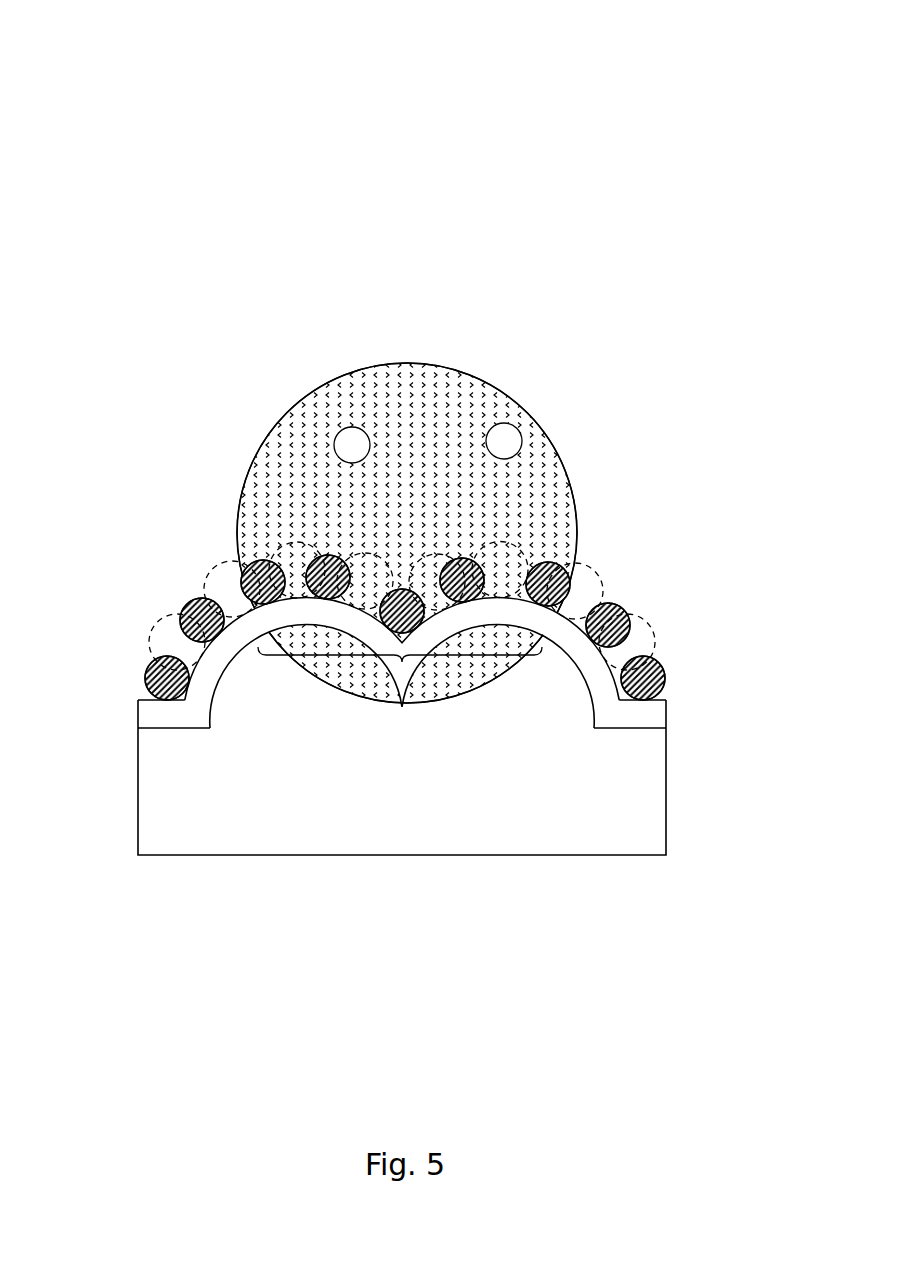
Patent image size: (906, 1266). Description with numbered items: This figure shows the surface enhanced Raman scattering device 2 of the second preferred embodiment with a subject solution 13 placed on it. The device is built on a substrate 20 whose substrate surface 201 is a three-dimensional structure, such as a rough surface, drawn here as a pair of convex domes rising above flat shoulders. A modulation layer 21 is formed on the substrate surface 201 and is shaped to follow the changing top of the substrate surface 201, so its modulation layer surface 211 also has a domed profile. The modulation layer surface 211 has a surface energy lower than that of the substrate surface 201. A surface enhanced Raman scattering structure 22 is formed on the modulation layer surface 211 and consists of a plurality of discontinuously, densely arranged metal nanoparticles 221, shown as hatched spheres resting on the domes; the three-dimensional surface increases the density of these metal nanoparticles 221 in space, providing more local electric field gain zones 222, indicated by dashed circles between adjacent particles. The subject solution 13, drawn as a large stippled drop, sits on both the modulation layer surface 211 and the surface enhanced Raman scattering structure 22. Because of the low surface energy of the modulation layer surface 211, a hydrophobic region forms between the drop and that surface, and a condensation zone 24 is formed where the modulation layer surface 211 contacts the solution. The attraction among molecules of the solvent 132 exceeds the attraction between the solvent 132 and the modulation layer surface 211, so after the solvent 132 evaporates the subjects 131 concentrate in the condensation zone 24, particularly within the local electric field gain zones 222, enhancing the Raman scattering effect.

The surface enhanced Raman scattering device 2 is at (407, 31).
The subject solution 13 is at (387, 494).
The subjects 131 is at (347, 442).
The solvent 132 is at (348, 374).
The substrate 20 is at (637, 758).
The substrate surface 201 is at (150, 727).
The modulation layer 21 is at (411, 681).
The modulation layer surface 211 is at (138, 698).
The surface enhanced Raman scattering structure 22 is at (419, 589).
The metal nanoparticles 221 is at (197, 602).
The local electric field gain zones 222 is at (510, 568).
The condensation zone 24 is at (400, 667).